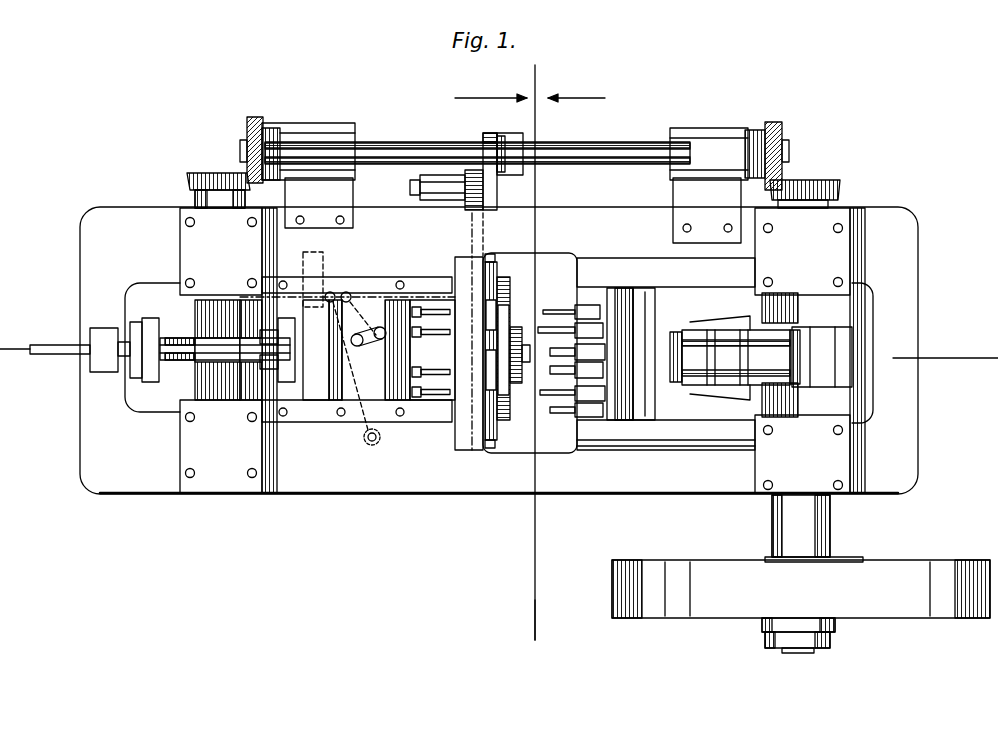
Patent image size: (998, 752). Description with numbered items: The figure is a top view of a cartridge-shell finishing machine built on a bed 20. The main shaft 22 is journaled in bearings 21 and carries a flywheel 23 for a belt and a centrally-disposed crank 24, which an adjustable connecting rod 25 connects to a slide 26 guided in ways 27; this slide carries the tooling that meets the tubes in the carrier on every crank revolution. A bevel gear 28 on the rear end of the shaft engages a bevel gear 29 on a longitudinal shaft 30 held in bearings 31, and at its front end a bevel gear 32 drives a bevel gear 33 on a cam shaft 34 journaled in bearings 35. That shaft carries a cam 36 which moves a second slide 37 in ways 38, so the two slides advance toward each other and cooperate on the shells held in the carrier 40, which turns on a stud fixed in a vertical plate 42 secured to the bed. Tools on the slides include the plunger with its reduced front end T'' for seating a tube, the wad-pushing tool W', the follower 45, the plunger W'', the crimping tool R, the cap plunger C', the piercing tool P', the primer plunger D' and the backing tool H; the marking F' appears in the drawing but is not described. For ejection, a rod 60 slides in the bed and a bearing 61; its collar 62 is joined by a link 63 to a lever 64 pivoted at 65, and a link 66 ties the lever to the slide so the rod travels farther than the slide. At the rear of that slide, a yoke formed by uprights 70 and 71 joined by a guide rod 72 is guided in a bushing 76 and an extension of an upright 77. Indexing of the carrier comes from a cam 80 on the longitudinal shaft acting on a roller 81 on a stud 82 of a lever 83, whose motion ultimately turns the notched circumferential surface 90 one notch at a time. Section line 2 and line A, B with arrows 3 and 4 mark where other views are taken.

The section line 2 is at (945, 345).
The viewing-direction arrow 3 is at (576, 87).
The viewing-direction arrow 4 is at (491, 87).
The section line end A is at (520, 350).
The section line end B is at (519, 628).
The bed 20 is at (912, 224).
The bearings 21 is at (852, 250).
The main shaft 22 is at (826, 530).
The flywheel 23 is at (898, 566).
The crank 24 is at (858, 340).
The adjustable connecting rod 25 is at (738, 372).
The slide 26 is at (685, 300).
The ways 27 is at (626, 270).
The bevel gear 28 is at (822, 182).
The bevel gear 29 is at (780, 128).
The longitudinal shaft 30 is at (592, 148).
The bearings 31 is at (318, 130).
The bevel gear 32 is at (252, 118).
The bevel gear 33 is at (192, 176).
The cam shaft 34 is at (212, 315).
The bearings 35 is at (184, 243).
The cam 36 is at (183, 362).
The slide 37 is at (345, 405).
The ways 38 is at (300, 412).
The carrier 40 is at (505, 300).
The plate 42 is at (462, 450).
The follower 45 is at (546, 393).
The ejector rod 60 is at (432, 300).
The bearing 61 is at (330, 290).
The collar 62 is at (328, 280).
The link 63 is at (350, 300).
The lever 64 is at (385, 410).
The pivot 65 is at (373, 446).
The link 66 is at (378, 328).
The upright 70 is at (282, 340).
The upright 71 is at (148, 370).
The guide rod 72 is at (212, 372).
The bushing 76 is at (78, 357).
The upright 77 is at (92, 366).
The cam 80 is at (490, 136).
The roller 81 is at (488, 208).
The stud 82 is at (480, 190).
The lever 83 is at (470, 208).
The notched circumferential surface 90 is at (489, 455).
The backing tool H is at (440, 293).
The face plate F' is at (486, 275).
The plunger D' is at (571, 300).
The piercing tool P' is at (560, 320).
The plunger C' is at (567, 349).
The crimping tool R is at (553, 369).
The wad-pushing tool W' is at (431, 394).
The plunger W'' is at (430, 334).
The reduced front end T'' is at (571, 422).